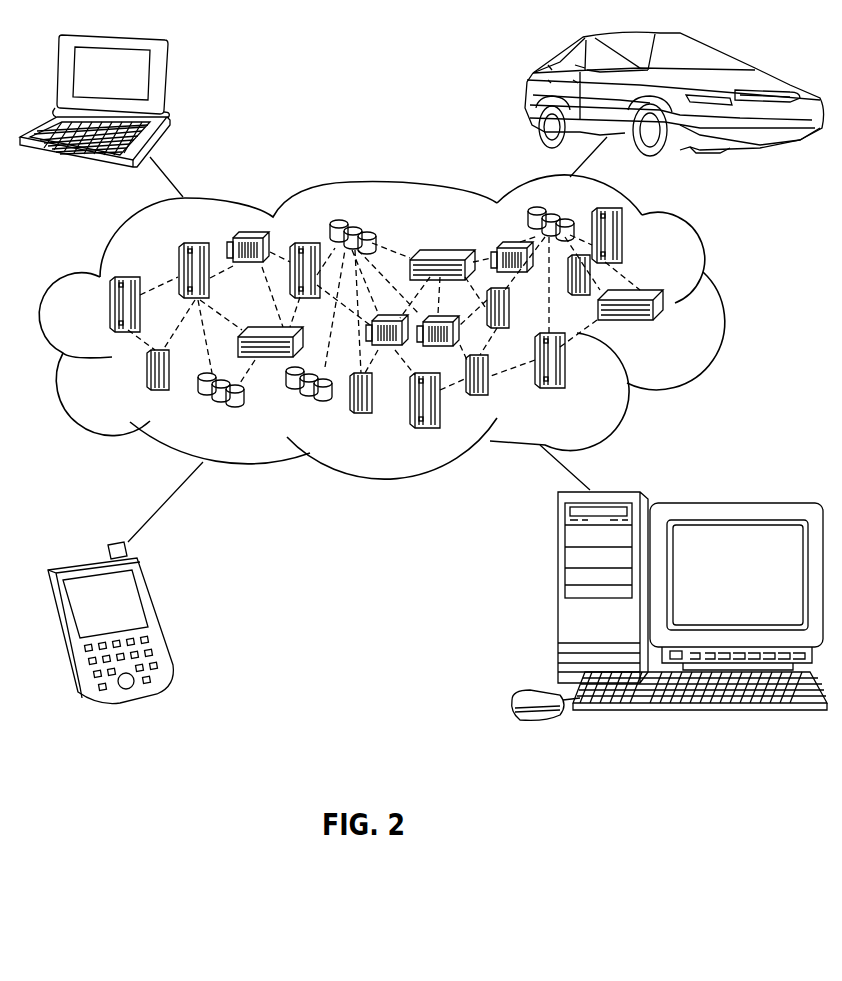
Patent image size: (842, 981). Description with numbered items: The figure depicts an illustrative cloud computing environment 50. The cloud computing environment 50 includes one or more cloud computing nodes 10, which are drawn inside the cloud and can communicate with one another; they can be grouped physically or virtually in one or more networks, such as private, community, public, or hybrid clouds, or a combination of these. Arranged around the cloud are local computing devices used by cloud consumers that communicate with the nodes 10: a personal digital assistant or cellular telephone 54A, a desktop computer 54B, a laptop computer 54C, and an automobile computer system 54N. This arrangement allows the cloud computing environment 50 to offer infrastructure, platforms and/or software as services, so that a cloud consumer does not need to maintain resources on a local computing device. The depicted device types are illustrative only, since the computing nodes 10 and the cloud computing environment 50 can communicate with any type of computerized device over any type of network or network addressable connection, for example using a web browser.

The cloud computing nodes 10 is at (683, 325).
The cloud computing environment 50 is at (703, 270).
The personal digital assistant or cellular telephone 54A is at (160, 617).
The desktop computer 54B is at (557, 595).
The laptop computer 54C is at (167, 80).
The automobile computer system 54N is at (530, 82).